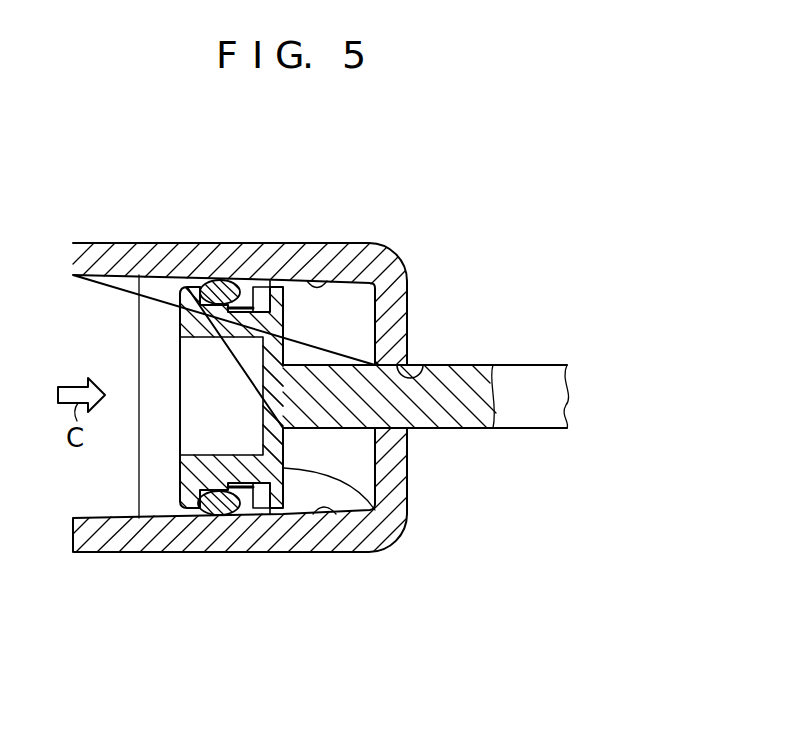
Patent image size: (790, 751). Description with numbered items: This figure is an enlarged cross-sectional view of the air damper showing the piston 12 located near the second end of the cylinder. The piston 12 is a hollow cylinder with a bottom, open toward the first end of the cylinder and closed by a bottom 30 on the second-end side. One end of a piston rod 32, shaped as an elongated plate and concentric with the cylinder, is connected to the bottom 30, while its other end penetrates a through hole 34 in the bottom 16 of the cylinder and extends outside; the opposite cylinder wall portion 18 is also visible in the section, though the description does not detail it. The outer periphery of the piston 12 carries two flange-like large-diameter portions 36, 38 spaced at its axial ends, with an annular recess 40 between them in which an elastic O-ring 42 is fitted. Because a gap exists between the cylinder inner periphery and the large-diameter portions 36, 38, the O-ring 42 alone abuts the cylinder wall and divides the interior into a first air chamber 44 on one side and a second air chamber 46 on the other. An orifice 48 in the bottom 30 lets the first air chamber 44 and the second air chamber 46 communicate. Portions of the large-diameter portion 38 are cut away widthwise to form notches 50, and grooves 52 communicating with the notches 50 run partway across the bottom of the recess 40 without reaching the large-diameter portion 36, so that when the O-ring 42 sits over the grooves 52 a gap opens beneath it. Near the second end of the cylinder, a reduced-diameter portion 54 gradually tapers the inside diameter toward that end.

The piston 12 is at (180, 446).
The bottom of the cylinder 16 is at (408, 314).
The housing lower wall 18 is at (215, 552).
The bottom of the piston 30 is at (375, 510).
The piston rod 32 is at (443, 430).
The through hole 34 is at (426, 376).
The large-diameter portion 36 is at (193, 287).
The large-diameter portion 38 is at (252, 303).
The annular recess 40 is at (211, 307).
The O-ring 42 is at (212, 282).
The first air chamber 44 is at (110, 340).
The second air chamber 46 is at (355, 470).
The orifice 48 is at (267, 349).
The notches 50 is at (284, 308).
The grooves 52 is at (242, 284).
The reduced-diameter portion 54 is at (327, 281).